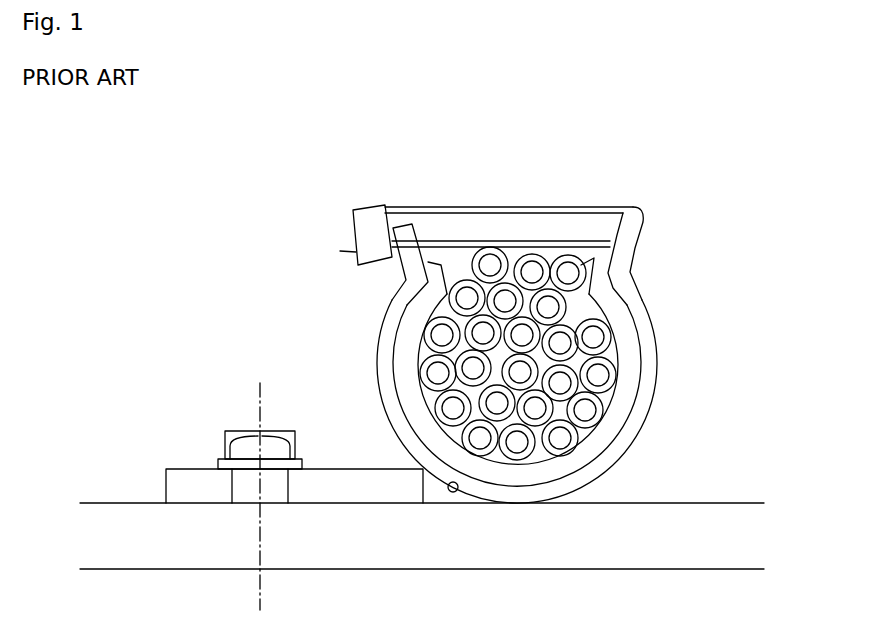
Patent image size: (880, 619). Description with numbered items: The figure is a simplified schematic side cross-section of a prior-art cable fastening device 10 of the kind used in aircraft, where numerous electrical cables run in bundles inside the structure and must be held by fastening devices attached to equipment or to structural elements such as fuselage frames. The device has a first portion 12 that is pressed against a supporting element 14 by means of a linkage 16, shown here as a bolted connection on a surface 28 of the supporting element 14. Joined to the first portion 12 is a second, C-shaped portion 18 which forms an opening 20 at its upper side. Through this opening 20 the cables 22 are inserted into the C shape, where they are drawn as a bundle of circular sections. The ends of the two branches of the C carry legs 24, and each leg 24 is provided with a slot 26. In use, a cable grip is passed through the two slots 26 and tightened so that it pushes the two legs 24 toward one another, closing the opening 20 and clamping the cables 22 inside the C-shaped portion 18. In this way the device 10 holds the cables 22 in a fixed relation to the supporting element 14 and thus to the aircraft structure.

The cable clamp assembly 10 is at (735, 441).
The first portion 12 is at (320, 487).
The supporting element 14 is at (733, 535).
The linkage 16 is at (259, 392).
The second C-shaped portion 18 is at (652, 395).
The opening 20 is at (530, 252).
The cables 22 is at (552, 305).
The legs 24 is at (627, 263).
The slots 26 is at (641, 207).
The mounting surface 28 is at (95, 501).